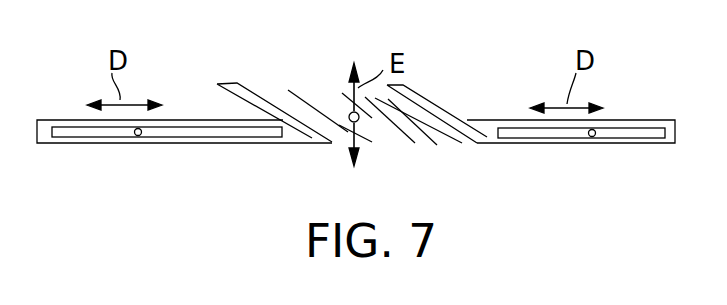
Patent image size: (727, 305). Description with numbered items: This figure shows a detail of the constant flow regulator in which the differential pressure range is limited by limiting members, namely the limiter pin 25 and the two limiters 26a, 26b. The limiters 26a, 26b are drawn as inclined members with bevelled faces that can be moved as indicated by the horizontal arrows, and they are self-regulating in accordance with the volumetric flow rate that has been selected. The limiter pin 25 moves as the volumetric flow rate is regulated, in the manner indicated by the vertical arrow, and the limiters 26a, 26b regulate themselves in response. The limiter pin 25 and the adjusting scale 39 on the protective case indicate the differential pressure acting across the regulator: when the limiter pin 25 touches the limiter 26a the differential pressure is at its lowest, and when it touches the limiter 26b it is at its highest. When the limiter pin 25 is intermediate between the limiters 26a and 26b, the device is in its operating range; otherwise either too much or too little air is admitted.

The limiter pin 25 is at (351, 123).
The limiter 26a is at (248, 96).
The limiter 26b is at (455, 110).
The adjusting scale 39 is at (406, 143).